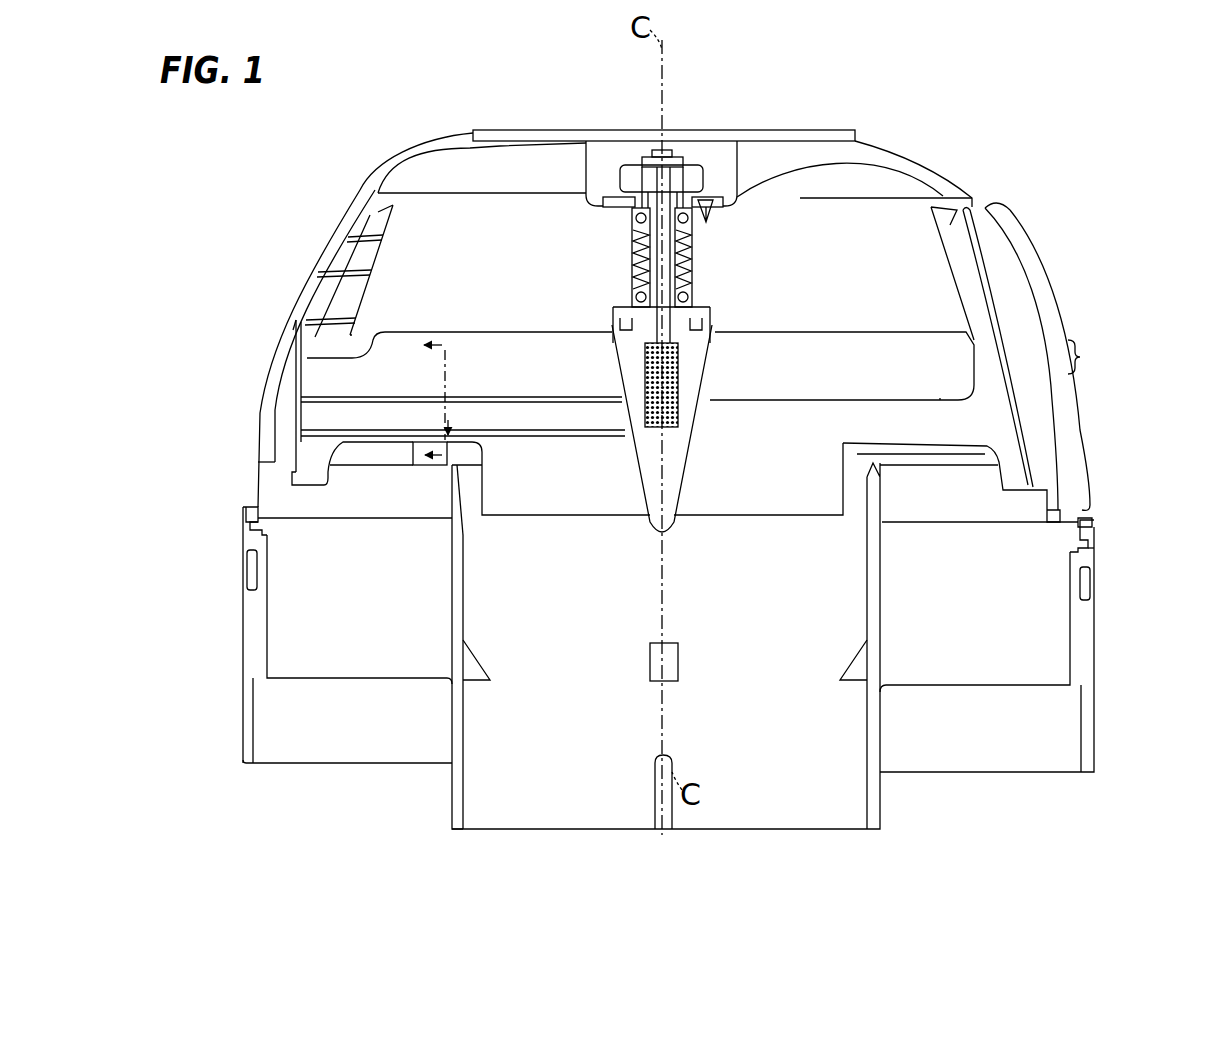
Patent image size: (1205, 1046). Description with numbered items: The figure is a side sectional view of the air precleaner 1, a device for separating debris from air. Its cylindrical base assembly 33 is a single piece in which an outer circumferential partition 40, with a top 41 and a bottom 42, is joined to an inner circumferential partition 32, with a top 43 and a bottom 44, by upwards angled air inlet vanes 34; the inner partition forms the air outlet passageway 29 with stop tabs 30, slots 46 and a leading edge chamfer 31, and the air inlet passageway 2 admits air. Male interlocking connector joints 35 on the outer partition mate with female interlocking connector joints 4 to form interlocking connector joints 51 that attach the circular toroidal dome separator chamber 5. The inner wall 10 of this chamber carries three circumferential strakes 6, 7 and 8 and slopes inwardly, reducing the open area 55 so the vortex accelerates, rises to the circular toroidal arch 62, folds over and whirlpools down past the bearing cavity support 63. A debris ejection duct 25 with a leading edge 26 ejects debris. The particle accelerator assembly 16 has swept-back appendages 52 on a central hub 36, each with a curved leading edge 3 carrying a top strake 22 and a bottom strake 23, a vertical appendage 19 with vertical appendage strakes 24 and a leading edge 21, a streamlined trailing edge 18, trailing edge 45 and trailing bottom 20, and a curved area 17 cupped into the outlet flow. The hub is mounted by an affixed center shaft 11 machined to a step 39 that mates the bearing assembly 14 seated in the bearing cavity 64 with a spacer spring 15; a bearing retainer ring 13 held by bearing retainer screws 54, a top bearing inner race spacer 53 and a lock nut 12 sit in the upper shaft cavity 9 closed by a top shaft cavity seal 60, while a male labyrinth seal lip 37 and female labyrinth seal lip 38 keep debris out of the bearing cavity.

The air precleaner 1 is at (560, 165).
The air inlet passageway 2 is at (1062, 732).
The curved appendage leading edge 3 is at (310, 414).
The female interlocking connector joint 4 is at (247, 530).
The circular toroidal dome separator chamber 5 is at (264, 375).
The circumferential strake 6 is at (256, 458).
The circumferential strake 7 is at (292, 322).
The circumferential strake 8 is at (377, 190).
The upper shaft cavity 9 is at (714, 140).
The inner wall 10 is at (343, 221).
The affixed center shaft 11 is at (676, 164).
The lock nut 12 is at (659, 138).
The bearing retainer ring 13 is at (611, 194).
The bearing assembly 14 is at (630, 218).
The spacer spring 15 is at (731, 146).
The particle accelerator assembly 16 is at (608, 388).
The curved area of the appendages 17 is at (738, 493).
The trailing edge of the particle accelerator appendage 18 is at (915, 423).
The vertical appendage 19 is at (338, 299).
The trailing bottom of the vertical appendage 20 is at (1011, 476).
The leading edge of the vertical appendage 21 is at (340, 266).
The top strake 22 is at (526, 393).
The bottom strake 23 is at (455, 345).
The vertical appendage strakes 24 is at (354, 310).
The debris ejection duct 25 is at (1091, 353).
The leading edge of the debris ejection duct 26 is at (985, 266).
The air outlet passageway 29 is at (548, 772).
The stop tabs 30 is at (645, 683).
The leading edge chamfer 31 is at (470, 470).
The inner circumferential partition 32 is at (466, 640).
The cylindrical base assembly 33 is at (252, 645).
The upwards angled air inlet vanes 34 is at (1042, 635).
The male interlocking connector joints 35 is at (262, 546).
The central hub 36 is at (690, 355).
The male labyrinth seal lip 37 is at (614, 318).
The female labyrinth seal lip 38 is at (630, 262).
The step 39 is at (700, 322).
The outer circumferential partition 40 is at (246, 700).
The top of the outer circumferential partition 41 is at (248, 510).
The bottom of the outer circumferential partition 42 is at (247, 770).
The top of the inner circumferential partition 43 is at (430, 470).
The bottom of the inner circumferential partition 44 is at (452, 833).
The trailing edge of the vertical appendage 45 is at (1000, 356).
The slots 46 is at (664, 822).
The interlocking connector joints 51 is at (1095, 572).
The swept-back appendage 52 is at (372, 412).
The top bearing inner race spacer 53 is at (650, 167).
The bearing retainer screws 54 is at (706, 193).
The open area 55 is at (848, 303).
The top shaft cavity seal 60 is at (858, 134).
The circular toroidal arch 62 is at (815, 162).
The bearing cavity support 63 is at (720, 238).
The bearing cavity 64 is at (700, 275).